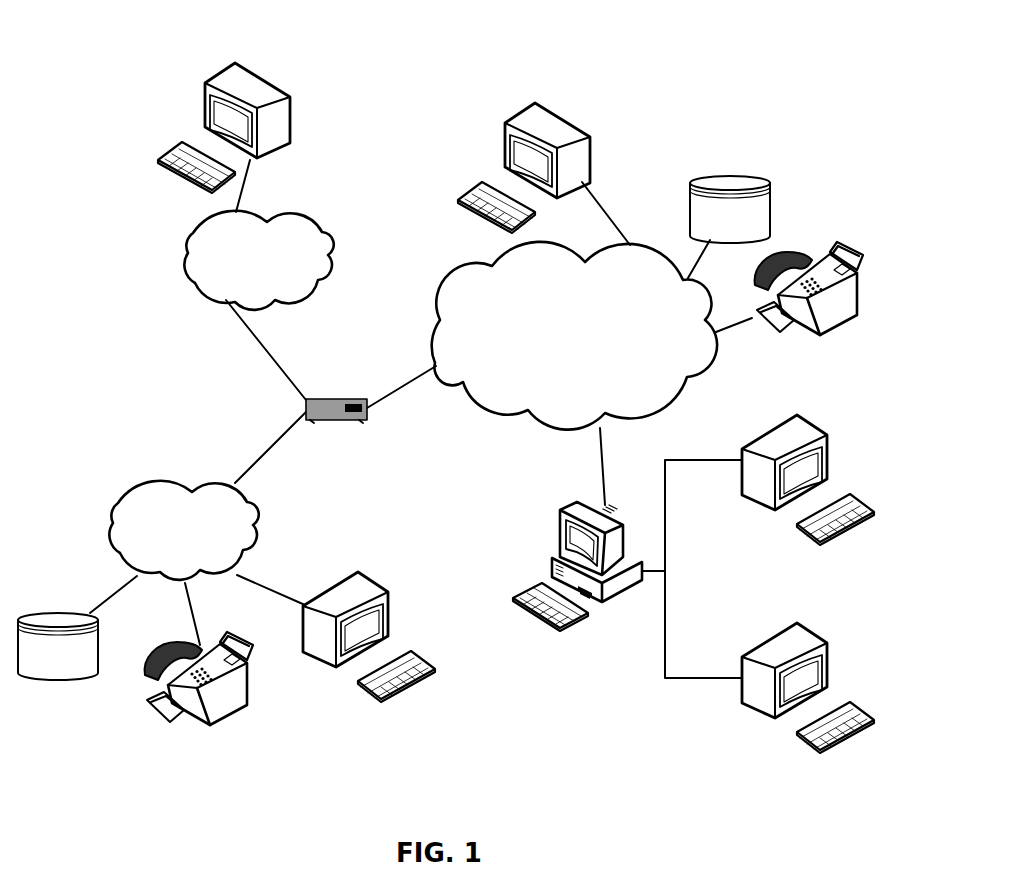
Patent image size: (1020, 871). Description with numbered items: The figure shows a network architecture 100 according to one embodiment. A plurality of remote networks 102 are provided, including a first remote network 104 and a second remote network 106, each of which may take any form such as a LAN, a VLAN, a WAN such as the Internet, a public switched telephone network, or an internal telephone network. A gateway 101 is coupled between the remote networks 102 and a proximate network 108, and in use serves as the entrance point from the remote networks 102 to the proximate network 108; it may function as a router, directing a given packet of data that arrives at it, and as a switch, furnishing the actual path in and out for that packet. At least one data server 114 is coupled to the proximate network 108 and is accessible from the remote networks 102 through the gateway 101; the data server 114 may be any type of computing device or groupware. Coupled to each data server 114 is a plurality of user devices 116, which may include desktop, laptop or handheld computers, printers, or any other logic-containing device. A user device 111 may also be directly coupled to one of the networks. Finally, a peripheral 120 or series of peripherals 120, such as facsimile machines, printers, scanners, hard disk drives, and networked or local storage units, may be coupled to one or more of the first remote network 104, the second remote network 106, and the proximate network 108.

The network architecture 100 is at (128, 45).
The gateway 101 is at (316, 399).
The remote networks 102 is at (146, 322).
The first remote network 104 is at (114, 505).
The second remote network 106 is at (333, 233).
The proximate network 108 is at (680, 398).
The user device 111 is at (590, 134).
The data server 114 is at (561, 525).
The user devices 116 is at (290, 101).
The peripheral 120 is at (770, 186).